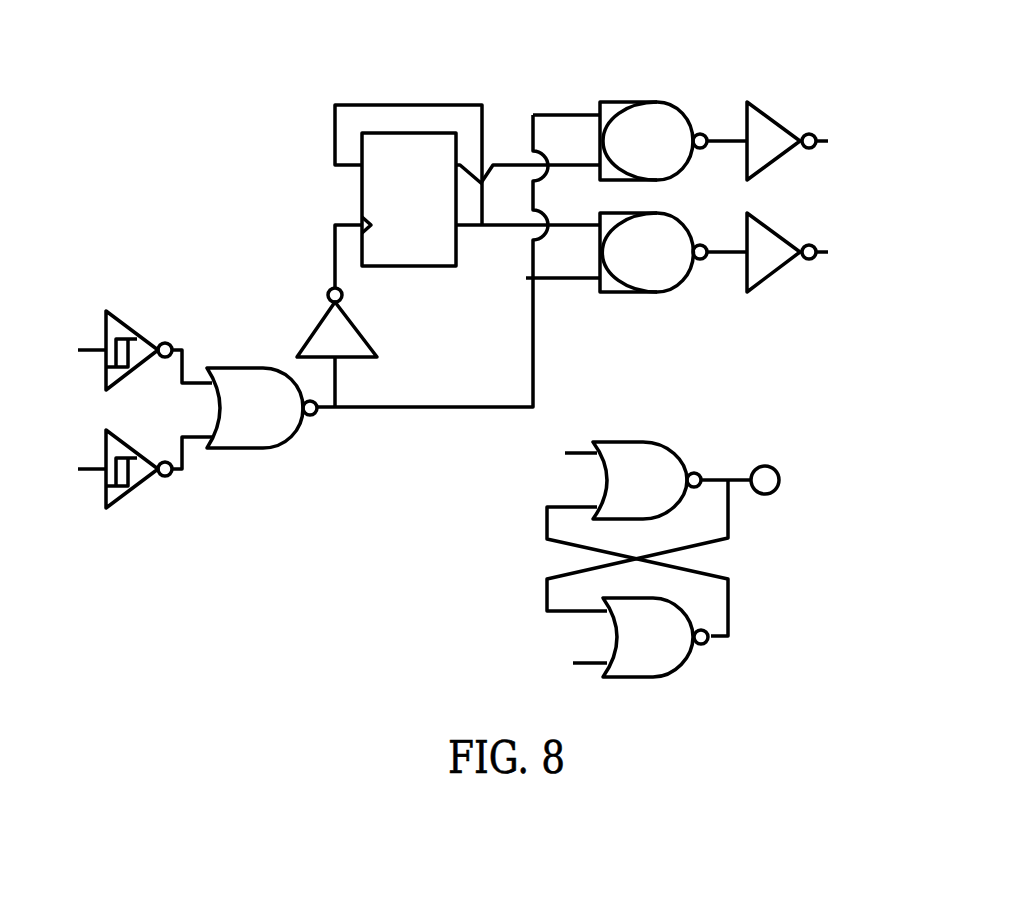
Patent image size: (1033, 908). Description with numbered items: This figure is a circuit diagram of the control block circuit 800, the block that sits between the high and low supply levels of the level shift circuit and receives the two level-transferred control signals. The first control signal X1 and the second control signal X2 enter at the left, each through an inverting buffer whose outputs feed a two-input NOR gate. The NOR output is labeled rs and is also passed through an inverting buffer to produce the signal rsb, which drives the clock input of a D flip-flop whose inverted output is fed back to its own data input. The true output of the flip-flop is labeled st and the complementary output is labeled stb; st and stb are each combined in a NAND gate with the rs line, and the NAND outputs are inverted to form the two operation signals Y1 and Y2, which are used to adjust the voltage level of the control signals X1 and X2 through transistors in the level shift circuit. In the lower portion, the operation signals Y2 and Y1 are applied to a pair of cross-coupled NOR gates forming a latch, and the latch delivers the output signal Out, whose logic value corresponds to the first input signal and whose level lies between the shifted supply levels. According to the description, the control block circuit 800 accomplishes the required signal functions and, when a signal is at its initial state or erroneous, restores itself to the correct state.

The control block circuit 800 is at (465, 350).
The first control signal X1 is at (124, 350).
The second control signal X2 is at (124, 469).
The first operation signal Y1 is at (821, 252).
The second operation signal Y2 is at (821, 141).
The output signal Out is at (777, 481).
The set signal st is at (528, 163).
The inverted set signal stb is at (528, 242).
The reset signal rs is at (458, 261).
The inverted reset signal rsb is at (332, 316).